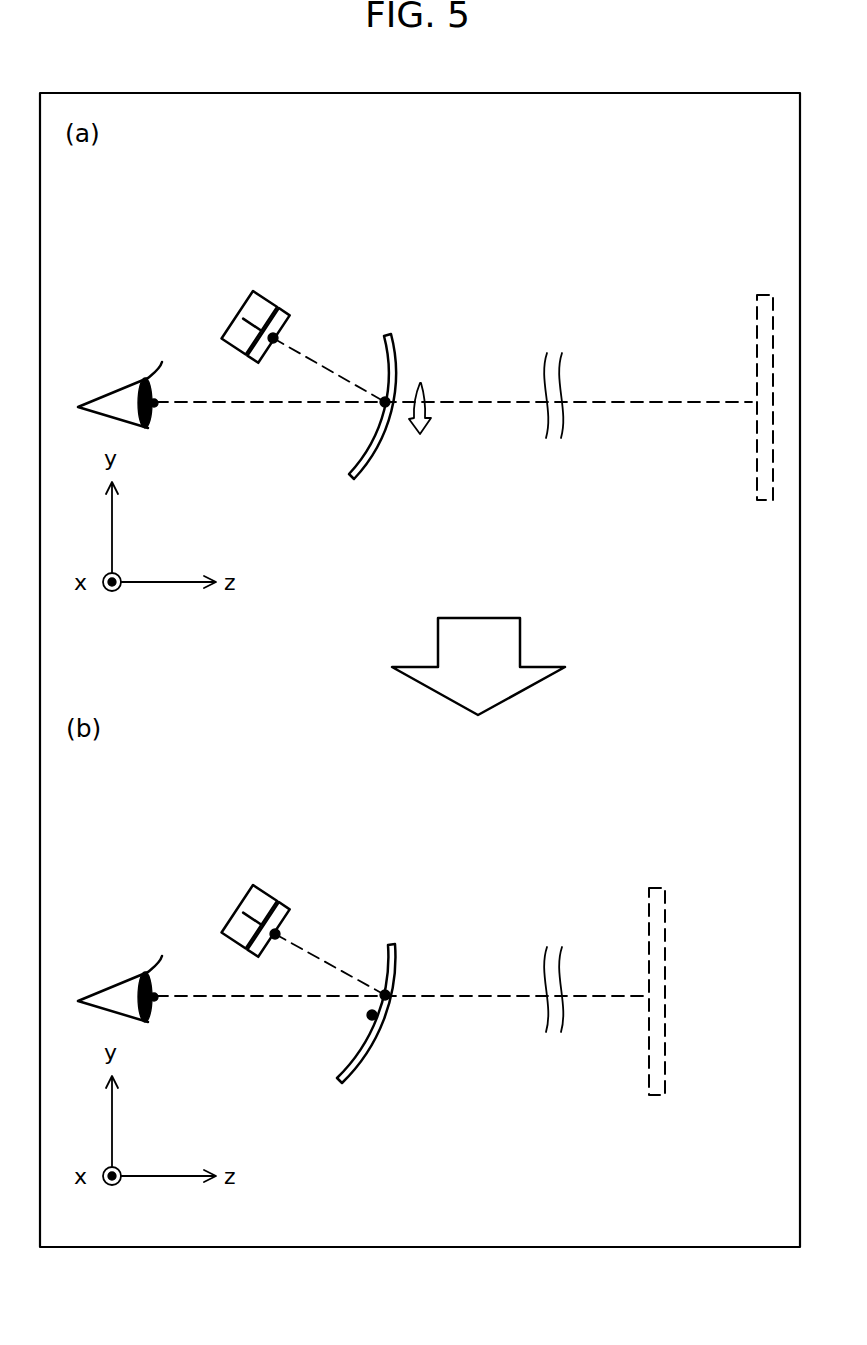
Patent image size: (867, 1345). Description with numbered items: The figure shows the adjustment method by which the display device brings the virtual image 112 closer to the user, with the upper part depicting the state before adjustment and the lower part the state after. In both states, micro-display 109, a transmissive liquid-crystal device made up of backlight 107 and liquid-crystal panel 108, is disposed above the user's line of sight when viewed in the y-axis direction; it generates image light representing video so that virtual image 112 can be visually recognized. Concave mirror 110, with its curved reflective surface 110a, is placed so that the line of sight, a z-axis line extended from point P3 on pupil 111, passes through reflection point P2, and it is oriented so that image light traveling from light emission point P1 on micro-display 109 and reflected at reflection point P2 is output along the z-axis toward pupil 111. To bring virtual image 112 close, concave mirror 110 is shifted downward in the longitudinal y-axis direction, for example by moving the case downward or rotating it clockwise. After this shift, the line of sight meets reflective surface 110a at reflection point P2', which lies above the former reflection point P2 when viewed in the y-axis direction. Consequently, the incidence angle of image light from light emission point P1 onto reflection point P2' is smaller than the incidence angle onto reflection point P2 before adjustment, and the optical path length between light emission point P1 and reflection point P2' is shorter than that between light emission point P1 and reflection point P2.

The backlight 107 is at (266, 298).
The liquid-crystal panel 108 is at (284, 310).
The micro-display 109 is at (283, 558).
The concave mirror 110 is at (392, 406).
The reflective surface 110a is at (347, 470).
The pupil 111 is at (150, 414).
The virtual image 112 is at (762, 504).
The light emission point P1 is at (278, 336).
The reflection point P2 is at (378, 631).
The reflection point P2' is at (398, 914).
The point on pupil P3 is at (156, 401).